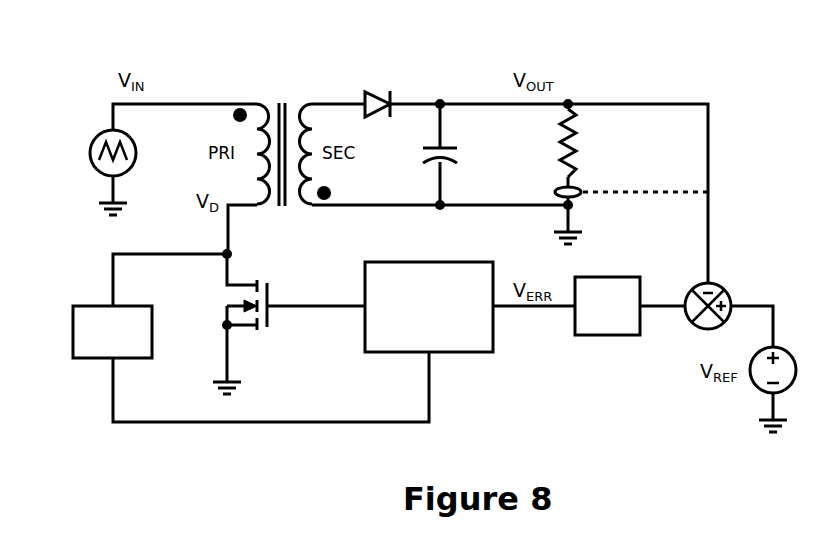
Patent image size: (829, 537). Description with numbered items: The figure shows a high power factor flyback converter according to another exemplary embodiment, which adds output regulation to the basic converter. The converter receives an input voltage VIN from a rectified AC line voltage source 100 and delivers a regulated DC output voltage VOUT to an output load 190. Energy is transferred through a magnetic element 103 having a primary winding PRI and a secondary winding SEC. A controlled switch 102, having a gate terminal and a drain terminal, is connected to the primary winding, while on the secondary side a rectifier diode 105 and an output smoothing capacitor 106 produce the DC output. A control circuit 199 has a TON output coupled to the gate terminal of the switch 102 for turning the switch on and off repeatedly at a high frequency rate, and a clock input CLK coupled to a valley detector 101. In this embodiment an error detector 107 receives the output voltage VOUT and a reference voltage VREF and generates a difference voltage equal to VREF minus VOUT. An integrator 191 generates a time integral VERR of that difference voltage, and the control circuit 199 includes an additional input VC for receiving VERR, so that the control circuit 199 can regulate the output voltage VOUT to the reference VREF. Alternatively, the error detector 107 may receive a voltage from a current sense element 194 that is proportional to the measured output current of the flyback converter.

The rectified AC line voltage source 100 is at (100, 128).
The valley detector 101 is at (98, 302).
The controlled switch 102 is at (215, 307).
The magnetic element 103 is at (283, 90).
The rectifier diode 105 is at (378, 90).
The output smoothing capacitor 106 is at (460, 153).
The error detector 107 is at (723, 276).
The output load 190 is at (588, 153).
The integrator 191 is at (605, 269).
The current sense element 194 is at (543, 193).
The control circuit 199 is at (473, 356).